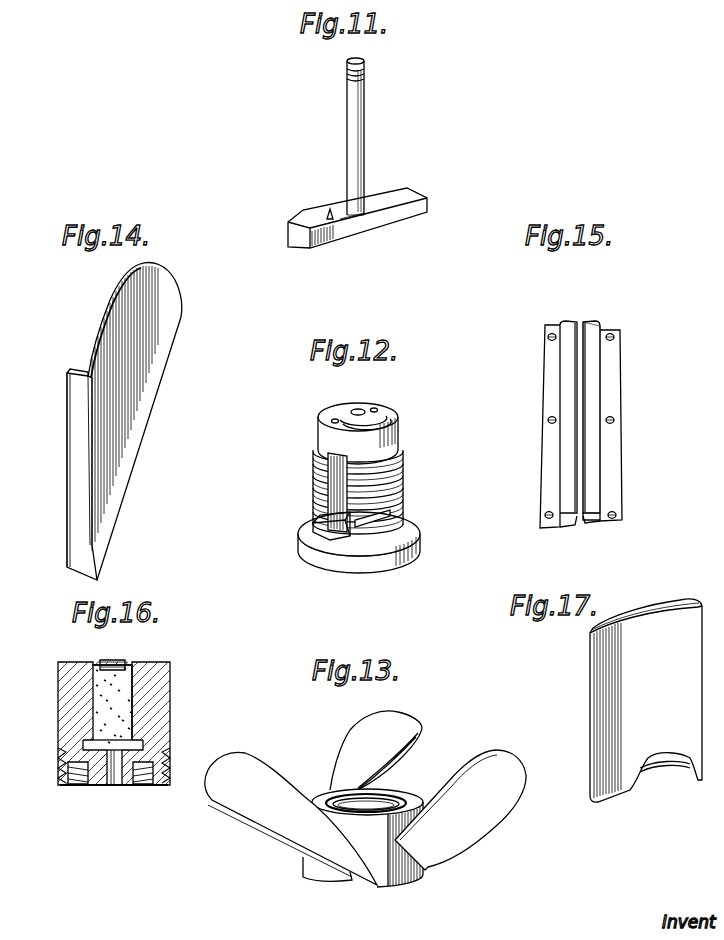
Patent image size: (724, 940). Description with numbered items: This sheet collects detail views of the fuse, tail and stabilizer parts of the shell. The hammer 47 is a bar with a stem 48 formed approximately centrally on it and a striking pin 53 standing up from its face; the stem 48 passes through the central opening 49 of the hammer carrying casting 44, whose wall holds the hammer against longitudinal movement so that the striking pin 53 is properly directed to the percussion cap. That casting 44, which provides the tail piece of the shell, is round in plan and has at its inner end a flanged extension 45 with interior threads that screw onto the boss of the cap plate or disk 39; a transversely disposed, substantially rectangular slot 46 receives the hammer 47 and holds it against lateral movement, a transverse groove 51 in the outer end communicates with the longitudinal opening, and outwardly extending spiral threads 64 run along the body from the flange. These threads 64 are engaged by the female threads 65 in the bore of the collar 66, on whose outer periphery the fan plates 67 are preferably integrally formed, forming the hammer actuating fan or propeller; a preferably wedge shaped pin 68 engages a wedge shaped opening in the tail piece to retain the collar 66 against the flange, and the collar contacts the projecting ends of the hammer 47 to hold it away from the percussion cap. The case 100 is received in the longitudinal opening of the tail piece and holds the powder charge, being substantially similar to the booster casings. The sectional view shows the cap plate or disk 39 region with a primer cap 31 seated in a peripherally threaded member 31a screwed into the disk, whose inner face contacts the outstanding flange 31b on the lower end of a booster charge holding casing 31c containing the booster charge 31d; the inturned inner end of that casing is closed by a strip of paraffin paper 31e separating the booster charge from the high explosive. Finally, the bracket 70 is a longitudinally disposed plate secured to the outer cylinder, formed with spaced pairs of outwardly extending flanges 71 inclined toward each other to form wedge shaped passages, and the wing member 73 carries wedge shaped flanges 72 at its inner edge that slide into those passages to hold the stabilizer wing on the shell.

In FIG. 11, the hammer 47 is at (388, 200).
In FIG. 11, the stem 48 is at (358, 126).
In FIG. 11, the striking pin 53 is at (327, 211).
In FIG. 14, the wedge shaped flanges 72 is at (73, 440).
In FIG. 14, the wing members 73 is at (158, 363).
In FIG. 15, the brackets 70 is at (598, 318).
In FIG. 15, the outwardly extending flanges 71 is at (590, 375).
In FIG. 12, the hammer carrying casting 44 is at (407, 433).
In FIG. 12, the central opening 49 is at (350, 411).
In FIG. 12, the transverse groove 51 is at (380, 413).
In FIG. 12, the spiral threads 64 is at (407, 486).
In FIG. 12, the flanged extension 45 is at (418, 538).
In FIG. 12, the slot 46 is at (328, 530).
In FIG. 16, the cap plate or disk 39 is at (62, 692).
In FIG. 16, the primer caps 31 is at (113, 785).
In FIG. 16, the peripherally threaded members 31a is at (138, 786).
In FIG. 16, the outstanding flanges 31b is at (160, 745).
In FIG. 16, the booster charge holding casings 31c is at (134, 678).
In FIG. 16, the booster charge 31d is at (128, 697).
In FIG. 16, the strip of paraffin paper 31e is at (128, 660).
In FIG. 13, the female threads 65 is at (392, 797).
In FIG. 13, the collar 66 is at (393, 887).
In FIG. 13, the fan plates 67 is at (512, 790).
In FIG. 13, the pin 68 is at (376, 751).
In FIG. 17, the case 100 is at (610, 697).